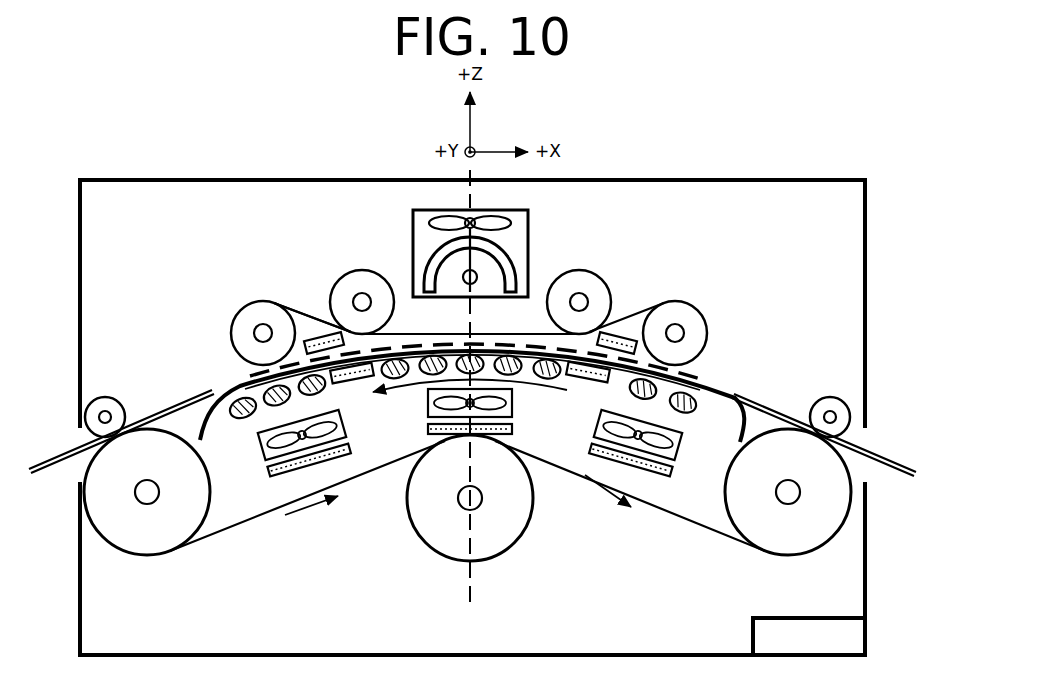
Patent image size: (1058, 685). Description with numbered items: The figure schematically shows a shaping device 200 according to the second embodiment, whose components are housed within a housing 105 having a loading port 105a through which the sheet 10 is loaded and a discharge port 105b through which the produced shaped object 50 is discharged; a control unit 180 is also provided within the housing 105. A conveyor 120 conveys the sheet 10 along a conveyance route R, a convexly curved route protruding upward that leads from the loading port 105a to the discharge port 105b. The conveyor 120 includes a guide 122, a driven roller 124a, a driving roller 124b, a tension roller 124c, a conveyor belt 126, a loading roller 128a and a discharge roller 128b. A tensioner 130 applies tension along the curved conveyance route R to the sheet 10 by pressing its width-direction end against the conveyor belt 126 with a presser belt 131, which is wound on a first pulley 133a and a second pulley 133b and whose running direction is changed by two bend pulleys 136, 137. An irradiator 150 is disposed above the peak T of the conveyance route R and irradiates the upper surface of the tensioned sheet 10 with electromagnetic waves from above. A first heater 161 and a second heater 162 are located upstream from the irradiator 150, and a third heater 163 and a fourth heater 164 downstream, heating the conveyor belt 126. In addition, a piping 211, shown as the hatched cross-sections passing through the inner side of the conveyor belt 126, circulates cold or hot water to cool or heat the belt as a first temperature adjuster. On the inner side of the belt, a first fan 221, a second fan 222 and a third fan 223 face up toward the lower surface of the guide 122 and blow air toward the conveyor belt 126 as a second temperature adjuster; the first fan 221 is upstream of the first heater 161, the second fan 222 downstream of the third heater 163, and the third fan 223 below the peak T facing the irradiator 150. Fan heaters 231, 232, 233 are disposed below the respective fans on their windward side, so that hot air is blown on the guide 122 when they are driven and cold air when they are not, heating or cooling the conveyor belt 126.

The shaping device 200 is at (752, 136).
The housing 105 is at (170, 180).
The loading port 105a is at (868, 469).
The discharge port 105b is at (76, 440).
The control unit 180 is at (753, 632).
The tensioner 130 is at (724, 315).
The second pulley 133b is at (245, 322).
The bend pulley 137 is at (363, 274).
The bend pulley 136 is at (583, 282).
The first pulley 133a is at (676, 312).
The presser belt 131 is at (323, 320).
The fourth heater 164 is at (320, 336).
The second heater 162 is at (625, 338).
The irradiator 150 is at (528, 240).
The peak T is at (492, 345).
The conveyor belt 126 is at (718, 400).
The conveyance route R is at (240, 385).
The guide 122 is at (203, 430).
The piping 211 is at (247, 418).
The third heater 163 is at (354, 380).
The first heater 161 is at (590, 380).
The fan heater 233 is at (450, 434).
The third fan 223 is at (533, 457).
The fan heater 232 is at (293, 476).
The second fan 222 is at (345, 457).
The fan heater 231 is at (625, 470).
The first fan 221 is at (663, 445).
The conveyor 120 is at (242, 535).
The driving roller 124b is at (144, 544).
The tension roller 124c is at (498, 538).
The driven roller 124a is at (805, 542).
The discharge roller 128b is at (106, 398).
The loading roller 128a is at (830, 398).
The shaped object 50 is at (58, 468).
The sheet 10 is at (885, 458).